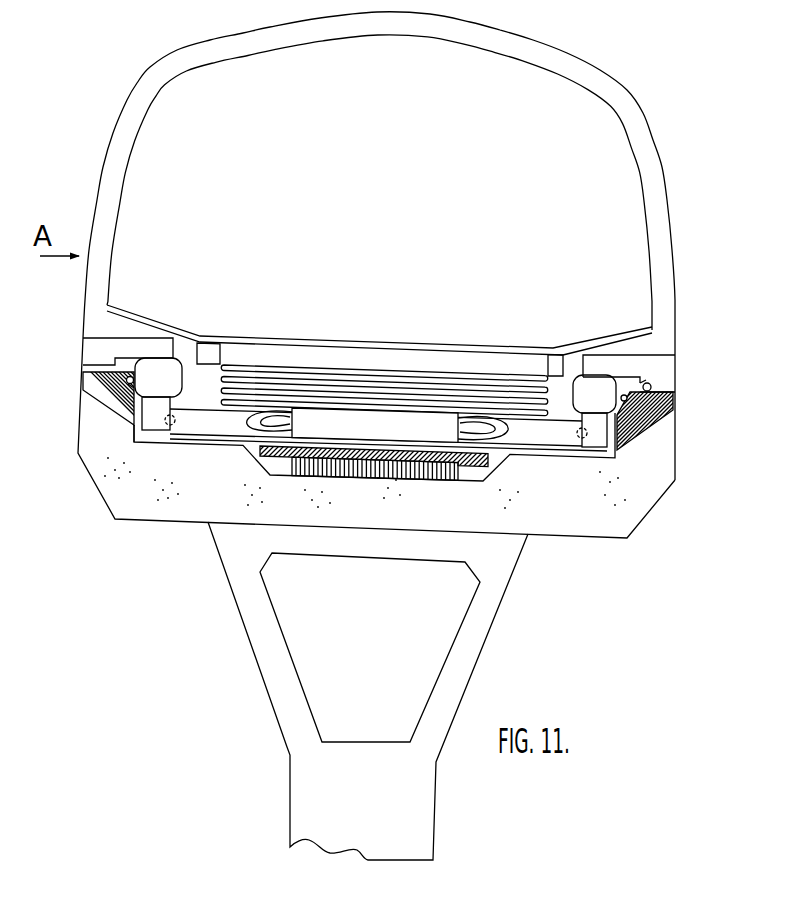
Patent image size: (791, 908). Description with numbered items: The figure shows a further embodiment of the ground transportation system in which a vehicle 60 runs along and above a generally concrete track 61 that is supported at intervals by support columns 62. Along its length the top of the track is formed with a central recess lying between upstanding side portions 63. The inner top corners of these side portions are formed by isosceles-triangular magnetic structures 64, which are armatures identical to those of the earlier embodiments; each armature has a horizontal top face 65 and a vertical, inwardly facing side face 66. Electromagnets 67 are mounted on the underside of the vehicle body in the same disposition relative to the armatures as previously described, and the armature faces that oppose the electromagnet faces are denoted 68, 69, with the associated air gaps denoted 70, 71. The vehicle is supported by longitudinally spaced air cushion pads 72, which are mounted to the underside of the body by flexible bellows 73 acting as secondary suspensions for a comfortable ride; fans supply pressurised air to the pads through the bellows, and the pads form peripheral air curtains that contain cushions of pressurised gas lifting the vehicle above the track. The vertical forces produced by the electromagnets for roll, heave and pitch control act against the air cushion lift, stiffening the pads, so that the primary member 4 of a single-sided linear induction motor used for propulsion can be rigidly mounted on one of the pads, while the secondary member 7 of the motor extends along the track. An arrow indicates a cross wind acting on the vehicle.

The primary member 4 is at (349, 407).
The secondary member 7 is at (417, 481).
The vehicle 60 is at (219, 38).
The track 61 is at (235, 498).
The support columns 62 is at (420, 780).
The upstanding side portions 63 is at (110, 432).
The magnetic structures 64 is at (91, 387).
The horizontal top faces 65 is at (654, 390).
The vertical inwardly facing side faces 66 is at (140, 405).
The electromagnets 67 is at (129, 334).
The armature face 68 is at (642, 380).
The armature face 69 is at (140, 418).
The air gap 70 is at (668, 391).
The air gap 71 is at (180, 416).
The air cushion pads 72 is at (552, 446).
The flexible bellows 73 is at (546, 382).